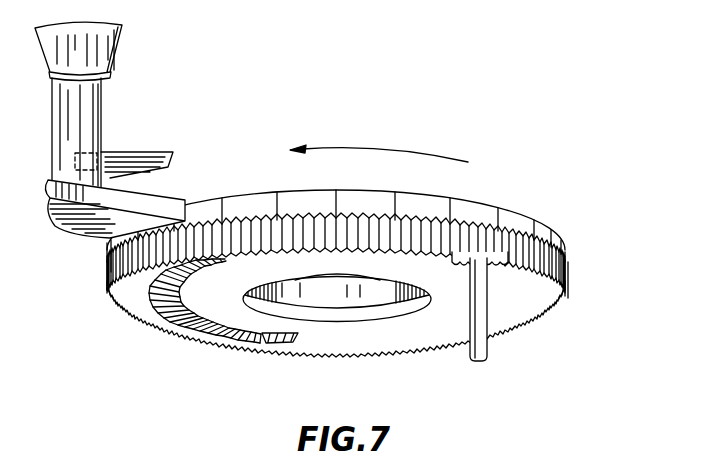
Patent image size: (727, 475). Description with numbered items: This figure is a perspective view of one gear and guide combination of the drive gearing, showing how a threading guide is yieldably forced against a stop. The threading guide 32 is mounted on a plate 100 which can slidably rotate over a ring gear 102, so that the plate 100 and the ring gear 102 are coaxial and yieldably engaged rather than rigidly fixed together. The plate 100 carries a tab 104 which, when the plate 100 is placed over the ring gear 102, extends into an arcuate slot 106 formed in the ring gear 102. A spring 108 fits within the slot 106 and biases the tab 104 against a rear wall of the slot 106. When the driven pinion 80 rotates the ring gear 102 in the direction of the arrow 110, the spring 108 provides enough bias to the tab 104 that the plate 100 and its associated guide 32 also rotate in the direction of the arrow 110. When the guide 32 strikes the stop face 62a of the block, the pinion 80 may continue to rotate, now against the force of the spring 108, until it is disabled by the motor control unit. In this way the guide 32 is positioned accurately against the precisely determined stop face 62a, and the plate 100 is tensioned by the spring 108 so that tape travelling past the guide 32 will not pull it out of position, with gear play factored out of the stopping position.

The threading guide 32 is at (110, 24).
The stop face 62a is at (88, 146).
The driven pinion 80 is at (487, 222).
The plate 100 is at (387, 199).
The ring gear 102 is at (569, 282).
The tab 104 is at (263, 338).
The arcuate slot 106 is at (283, 352).
The spring 108 is at (160, 314).
The arrow 110 is at (423, 153).